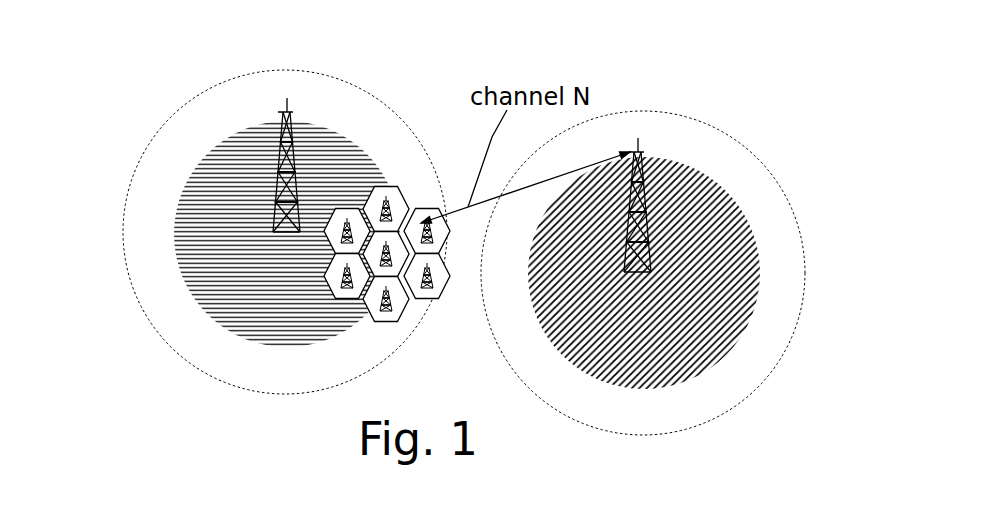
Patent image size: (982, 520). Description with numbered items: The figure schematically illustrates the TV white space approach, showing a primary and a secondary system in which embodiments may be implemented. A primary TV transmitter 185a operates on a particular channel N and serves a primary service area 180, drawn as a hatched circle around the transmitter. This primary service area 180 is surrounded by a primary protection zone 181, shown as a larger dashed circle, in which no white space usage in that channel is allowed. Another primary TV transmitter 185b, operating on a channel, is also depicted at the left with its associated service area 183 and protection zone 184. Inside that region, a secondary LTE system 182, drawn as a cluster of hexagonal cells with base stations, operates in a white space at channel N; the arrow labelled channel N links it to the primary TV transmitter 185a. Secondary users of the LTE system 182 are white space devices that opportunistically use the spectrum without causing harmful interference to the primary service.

The primary service area 180 is at (653, 227).
The primary protection zone 181 is at (643, 237).
The secondary LTE system 182 is at (394, 198).
The service area 183 is at (276, 189).
The protection zone 184 is at (268, 232).
The primary TV transmitter 185a is at (611, 155).
The primary TV transmitter 185b is at (327, 128).